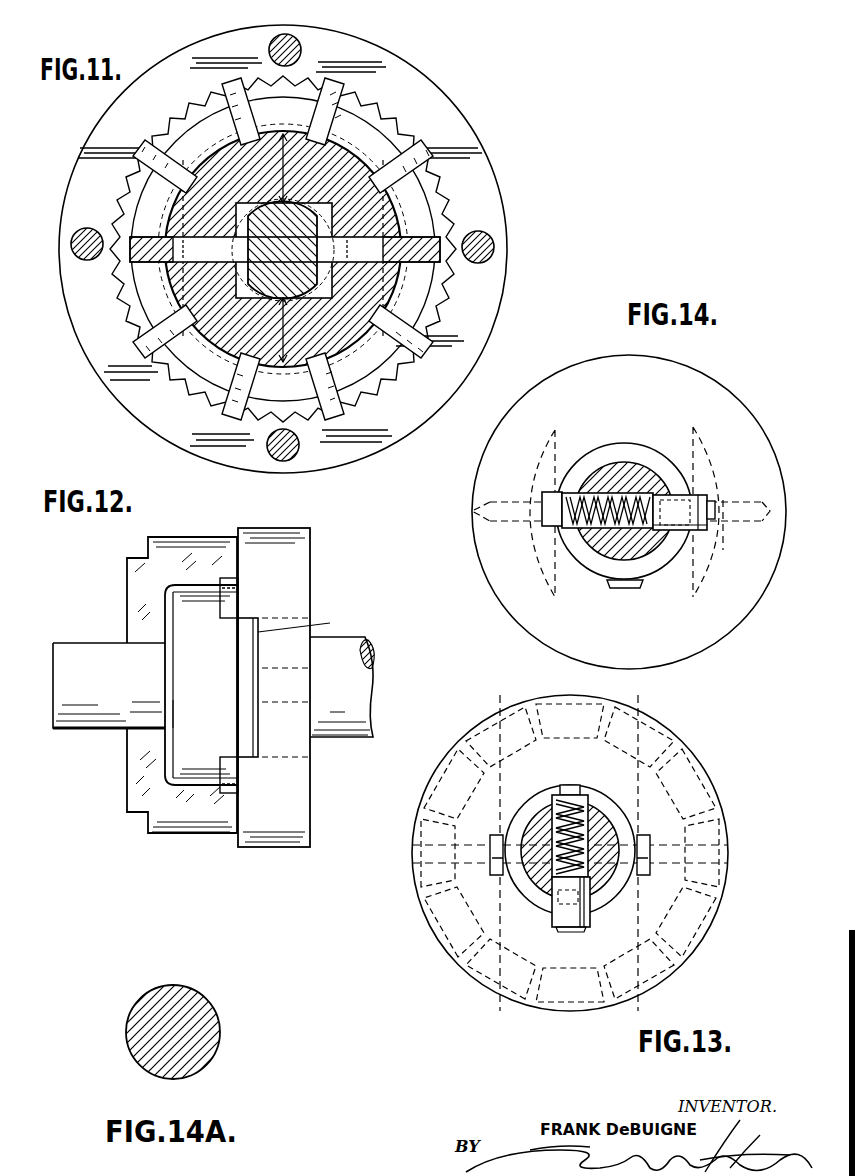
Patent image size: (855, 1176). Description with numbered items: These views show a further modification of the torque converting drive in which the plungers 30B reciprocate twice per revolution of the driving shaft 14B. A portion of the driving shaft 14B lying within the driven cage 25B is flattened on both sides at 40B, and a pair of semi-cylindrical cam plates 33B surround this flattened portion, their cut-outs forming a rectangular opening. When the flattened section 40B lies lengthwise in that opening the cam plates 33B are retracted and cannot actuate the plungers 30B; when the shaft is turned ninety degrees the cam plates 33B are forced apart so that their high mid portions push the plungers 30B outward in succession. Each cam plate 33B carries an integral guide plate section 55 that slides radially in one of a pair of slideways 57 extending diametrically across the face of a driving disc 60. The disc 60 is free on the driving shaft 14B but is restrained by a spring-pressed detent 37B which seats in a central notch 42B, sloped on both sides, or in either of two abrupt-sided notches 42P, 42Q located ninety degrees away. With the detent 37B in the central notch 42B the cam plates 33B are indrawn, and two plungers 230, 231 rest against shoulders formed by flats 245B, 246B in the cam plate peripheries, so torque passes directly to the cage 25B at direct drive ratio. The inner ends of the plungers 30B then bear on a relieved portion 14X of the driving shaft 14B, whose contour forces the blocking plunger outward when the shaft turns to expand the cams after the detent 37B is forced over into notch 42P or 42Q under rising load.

In FIG. 11, the cage 25B is at (363, 138).
In FIG. 11, the flattened portion of driving shaft 40B is at (285, 249).
In FIG. 11, the flat 245B is at (440, 276).
In FIG. 13, the flat 245B is at (712, 878).
In FIG. 11, the flat 246B is at (157, 273).
In FIG. 13, the flat 246B is at (432, 866).
In FIG. 12, the plunger 30B is at (185, 558).
In FIG. 12, the semi-cylindrical cam plate 33B is at (201, 685).
In FIG. 12, the driving shaft 14B is at (363, 694).
In FIG. 12, the driving disc 60 is at (297, 571).
In FIG. 12, the guide plate section 55 is at (247, 627).
In FIG. 12, the slideway 57 is at (307, 622).
In FIG. 14, the notch 42P is at (550, 527).
In FIG. 13, the notch 42P is at (500, 873).
In FIG. 14, the notch 42Q is at (731, 496).
In FIG. 13, the notch 42Q is at (650, 875).
In FIG. 14, the spring-pressed detent 37B is at (715, 506).
In FIG. 13, the spring-pressed detent 37B is at (560, 912).
In FIG. 13, the plunger 230 is at (412, 861).
In FIG. 13, the plunger 231 is at (718, 808).
In FIG. 13, the central notch 42B is at (585, 920).
In FIG. 14A, the relieved portion of driving shaft 14X is at (204, 998).